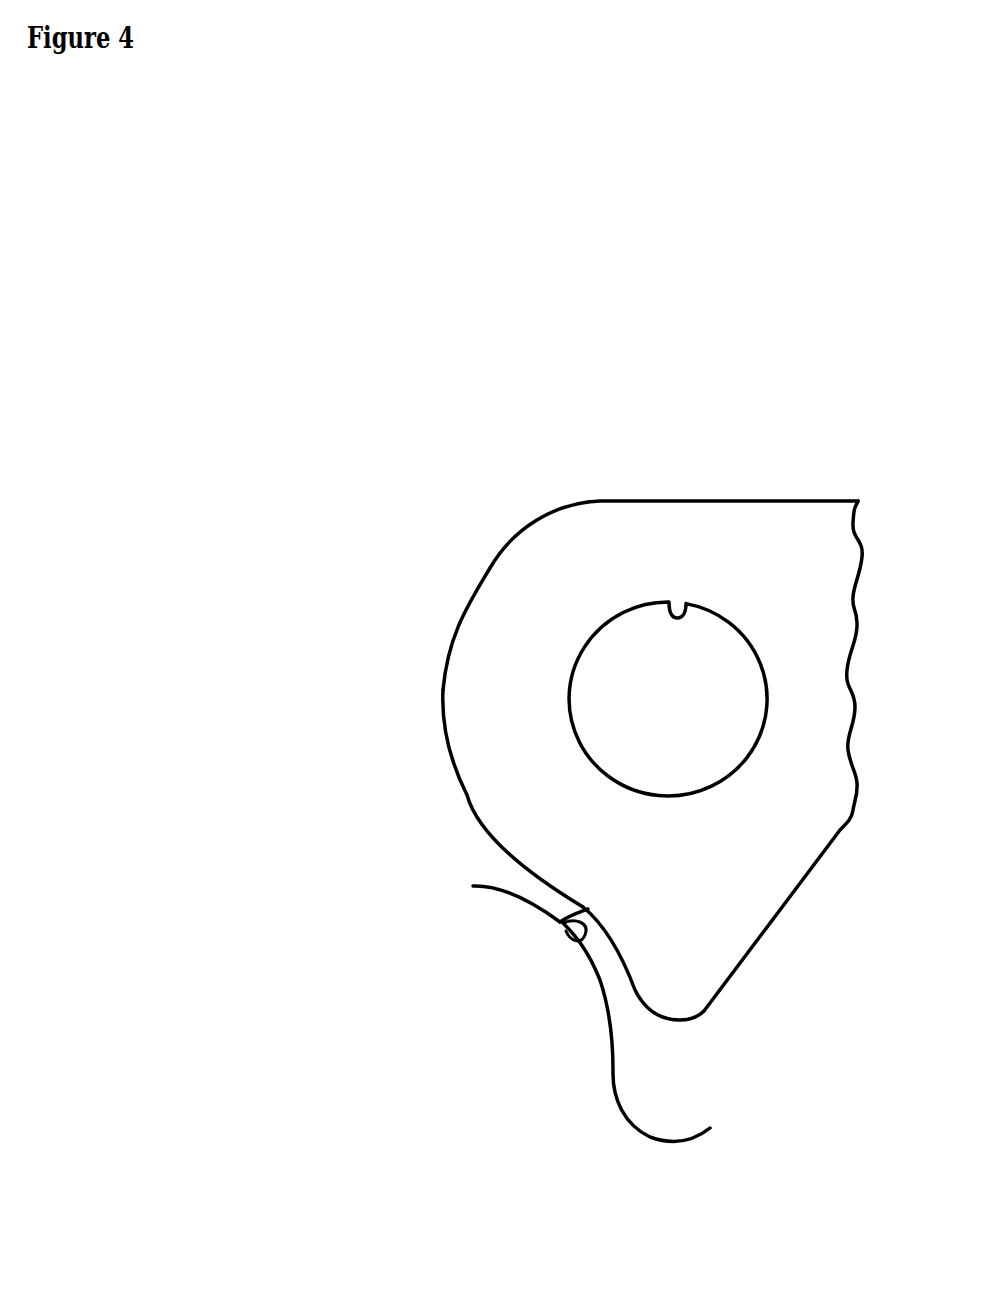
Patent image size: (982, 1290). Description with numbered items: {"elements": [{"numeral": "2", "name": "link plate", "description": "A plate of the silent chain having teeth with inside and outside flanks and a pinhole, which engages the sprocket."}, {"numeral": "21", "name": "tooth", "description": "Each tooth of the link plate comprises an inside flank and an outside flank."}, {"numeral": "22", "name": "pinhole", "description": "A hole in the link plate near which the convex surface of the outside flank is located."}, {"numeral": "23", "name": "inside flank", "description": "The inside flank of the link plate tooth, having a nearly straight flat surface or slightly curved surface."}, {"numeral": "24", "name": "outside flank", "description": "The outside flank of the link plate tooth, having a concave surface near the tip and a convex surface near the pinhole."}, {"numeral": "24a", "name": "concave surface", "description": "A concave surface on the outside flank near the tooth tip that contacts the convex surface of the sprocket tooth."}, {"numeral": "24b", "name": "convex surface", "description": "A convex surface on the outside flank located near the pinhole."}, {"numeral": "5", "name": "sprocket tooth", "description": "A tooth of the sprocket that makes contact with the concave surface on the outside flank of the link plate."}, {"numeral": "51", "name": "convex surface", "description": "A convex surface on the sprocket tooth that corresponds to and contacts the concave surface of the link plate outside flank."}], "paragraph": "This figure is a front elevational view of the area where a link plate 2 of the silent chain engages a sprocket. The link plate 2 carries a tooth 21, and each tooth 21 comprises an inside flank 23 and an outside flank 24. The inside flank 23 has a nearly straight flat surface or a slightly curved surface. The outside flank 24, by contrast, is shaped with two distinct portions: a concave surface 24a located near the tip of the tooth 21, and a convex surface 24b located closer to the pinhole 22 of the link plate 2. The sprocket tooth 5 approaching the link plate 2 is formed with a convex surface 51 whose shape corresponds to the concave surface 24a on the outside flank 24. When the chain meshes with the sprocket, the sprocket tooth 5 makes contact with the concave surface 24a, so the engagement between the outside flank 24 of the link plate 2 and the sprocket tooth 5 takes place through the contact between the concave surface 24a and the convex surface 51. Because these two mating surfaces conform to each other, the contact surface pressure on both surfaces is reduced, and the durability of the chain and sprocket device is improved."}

The work (workpiece / part) 2 is at (560, 719).
The rounded tip portion 21 is at (682, 1008).
The hole 22 is at (684, 614).
The inclined edge 23 is at (760, 943).
The flange portion 24 is at (423, 825).
The flange edge surface 24a is at (560, 922).
The flange outer surface 24b is at (467, 795).
The hook member 5 is at (593, 1072).
The hook tip 51 is at (577, 938).